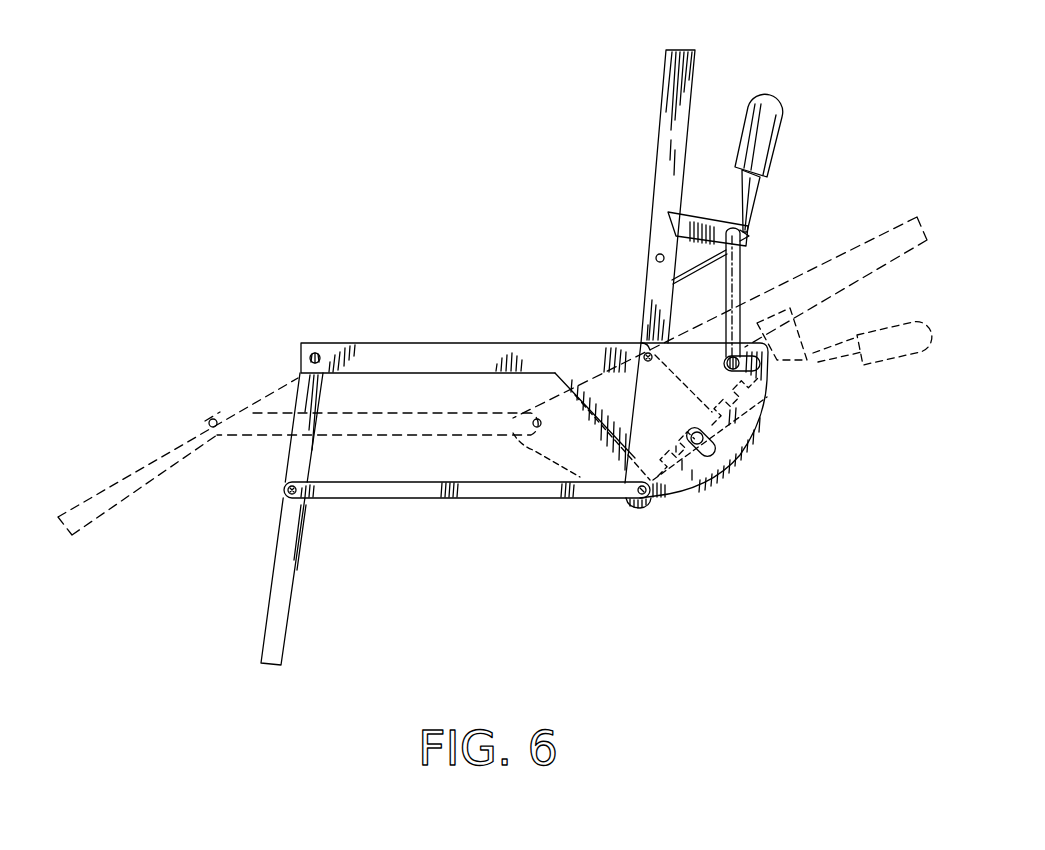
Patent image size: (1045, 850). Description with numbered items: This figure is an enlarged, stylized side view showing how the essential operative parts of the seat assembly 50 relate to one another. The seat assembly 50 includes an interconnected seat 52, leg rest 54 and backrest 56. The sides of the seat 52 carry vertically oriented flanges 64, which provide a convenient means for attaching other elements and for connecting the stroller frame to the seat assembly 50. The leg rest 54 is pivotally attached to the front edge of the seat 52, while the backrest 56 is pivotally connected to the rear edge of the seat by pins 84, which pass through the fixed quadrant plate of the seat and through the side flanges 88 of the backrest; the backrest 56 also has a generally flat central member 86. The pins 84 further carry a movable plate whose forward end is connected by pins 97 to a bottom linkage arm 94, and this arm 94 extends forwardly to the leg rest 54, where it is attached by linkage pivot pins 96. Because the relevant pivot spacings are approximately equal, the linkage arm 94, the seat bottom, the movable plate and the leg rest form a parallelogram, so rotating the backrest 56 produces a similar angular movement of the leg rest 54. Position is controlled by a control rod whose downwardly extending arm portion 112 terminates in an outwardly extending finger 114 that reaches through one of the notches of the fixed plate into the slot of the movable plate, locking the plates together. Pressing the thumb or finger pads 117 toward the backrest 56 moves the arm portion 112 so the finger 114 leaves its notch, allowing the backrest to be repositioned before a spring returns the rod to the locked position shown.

The seat assembly 50 is at (706, 67).
The seat 52 is at (440, 330).
The leg rest 54 is at (133, 450).
The backrest 56 is at (646, 106).
The vertically oriented flanges 64 is at (348, 360).
The pins 84 is at (642, 360).
The central member 86 is at (657, 255).
The side flanges 88 is at (668, 184).
The bottom linkage arm 94 is at (466, 490).
The linkage pivot pins 96 is at (288, 490).
The pins 97 is at (648, 503).
The arm portion 112 is at (740, 272).
The finger 114 is at (758, 392).
The thumb or finger pads 117 is at (768, 112).